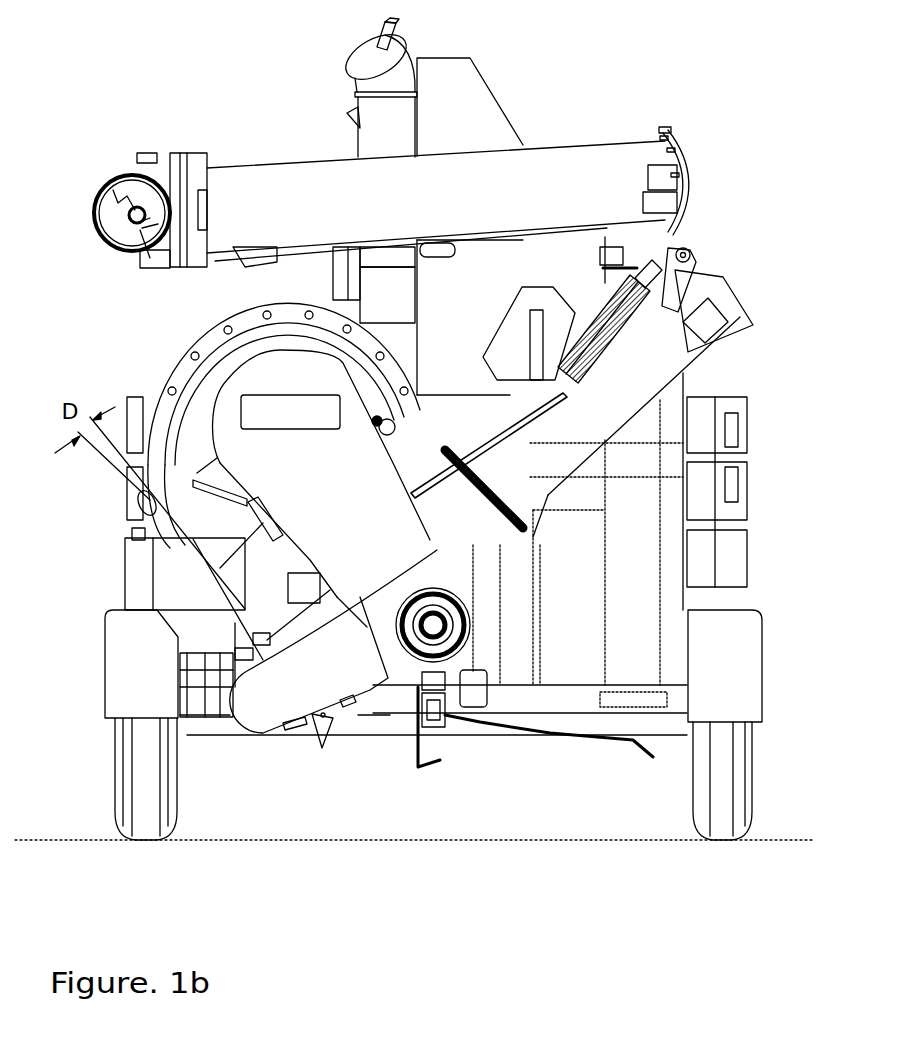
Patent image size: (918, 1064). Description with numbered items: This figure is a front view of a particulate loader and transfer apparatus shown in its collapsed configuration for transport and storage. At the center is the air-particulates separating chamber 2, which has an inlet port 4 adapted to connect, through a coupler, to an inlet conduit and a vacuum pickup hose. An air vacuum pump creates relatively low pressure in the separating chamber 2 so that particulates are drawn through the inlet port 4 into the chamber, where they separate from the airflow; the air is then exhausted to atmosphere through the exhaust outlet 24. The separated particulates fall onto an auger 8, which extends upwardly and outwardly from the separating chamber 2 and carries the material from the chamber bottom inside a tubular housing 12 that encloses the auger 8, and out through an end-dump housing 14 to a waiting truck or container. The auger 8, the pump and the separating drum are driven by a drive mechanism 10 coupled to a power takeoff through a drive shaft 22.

The air-particulates separating chamber 2 is at (190, 418).
The inlet port 4 is at (170, 582).
The auger 8 is at (113, 190).
The drive mechanism 10 is at (378, 625).
The tubular housing 12 is at (565, 192).
The end-dump housing 14 is at (458, 122).
The drive shaft 22 is at (420, 645).
The exhaust outlet 24 is at (378, 127).